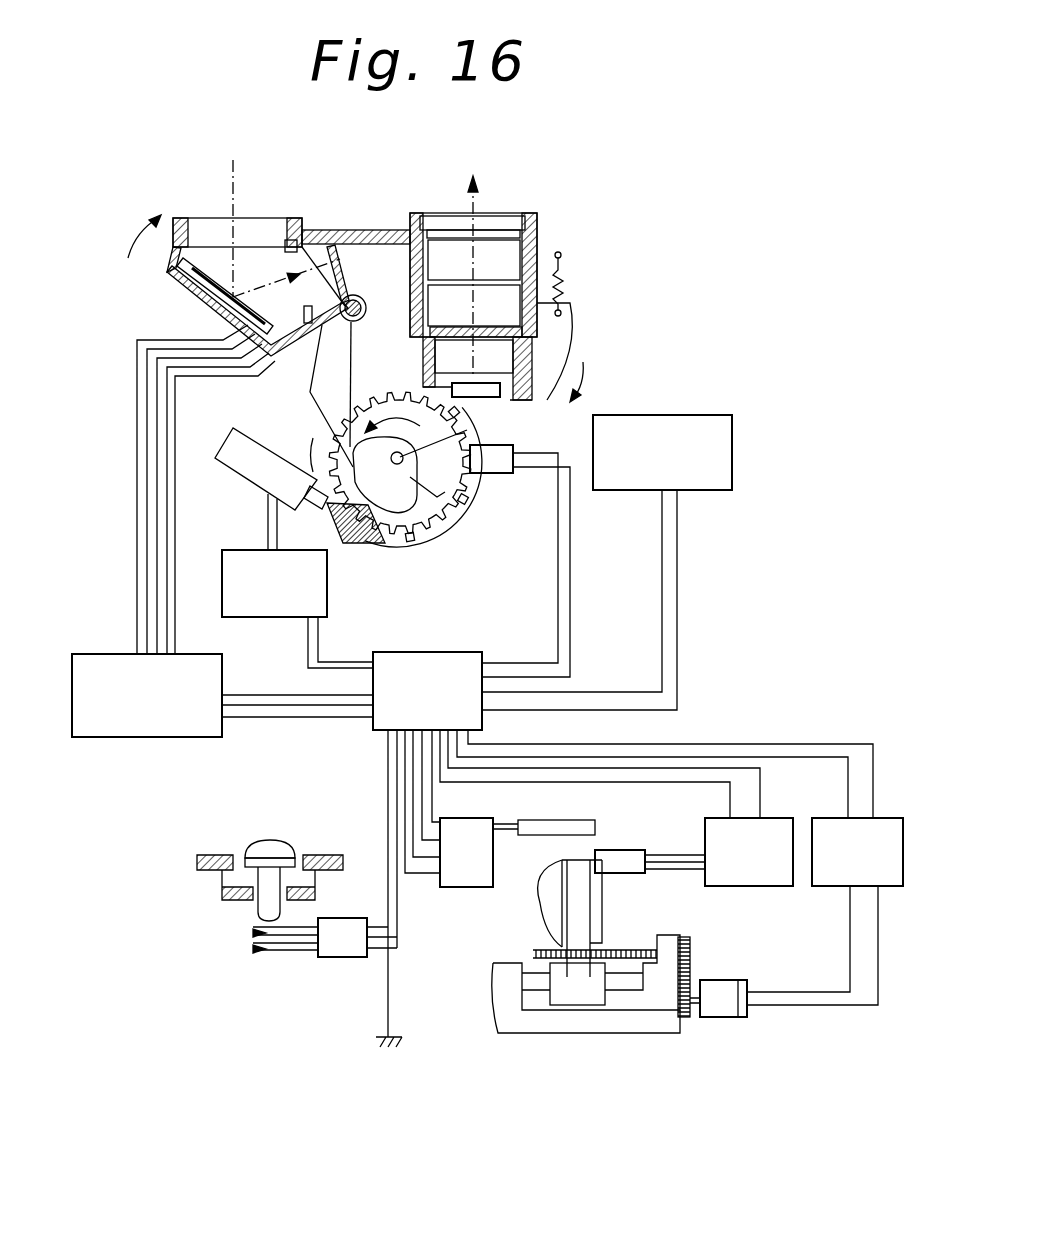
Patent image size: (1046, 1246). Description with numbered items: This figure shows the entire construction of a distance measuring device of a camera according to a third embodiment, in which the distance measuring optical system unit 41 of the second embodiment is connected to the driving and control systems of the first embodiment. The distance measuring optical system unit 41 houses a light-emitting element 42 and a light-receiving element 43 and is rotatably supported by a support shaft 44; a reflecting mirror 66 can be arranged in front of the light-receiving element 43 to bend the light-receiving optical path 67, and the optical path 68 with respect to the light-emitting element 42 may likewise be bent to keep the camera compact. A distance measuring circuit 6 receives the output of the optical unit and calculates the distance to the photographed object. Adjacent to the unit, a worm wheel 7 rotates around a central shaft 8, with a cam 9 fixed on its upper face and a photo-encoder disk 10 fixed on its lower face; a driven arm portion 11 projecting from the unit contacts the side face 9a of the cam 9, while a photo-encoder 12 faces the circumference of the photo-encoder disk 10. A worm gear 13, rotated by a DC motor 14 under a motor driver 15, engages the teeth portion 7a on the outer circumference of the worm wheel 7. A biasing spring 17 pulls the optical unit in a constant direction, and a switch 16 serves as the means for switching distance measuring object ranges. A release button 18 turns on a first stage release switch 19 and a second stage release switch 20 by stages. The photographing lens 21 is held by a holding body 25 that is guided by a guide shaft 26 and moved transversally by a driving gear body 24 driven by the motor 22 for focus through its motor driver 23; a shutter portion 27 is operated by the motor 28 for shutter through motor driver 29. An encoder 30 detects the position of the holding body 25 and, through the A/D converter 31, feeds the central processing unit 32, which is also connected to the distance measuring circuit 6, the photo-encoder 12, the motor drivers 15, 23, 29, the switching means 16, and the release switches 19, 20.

The distance measuring circuit 6 is at (130, 738).
The worm wheel 7 is at (437, 505).
The teeth portion 7a is at (483, 487).
The central shaft 8 is at (422, 350).
The cam 9 is at (393, 505).
The side face 9a is at (468, 512).
The photo-encoder disk 10 is at (317, 443).
The driven arm portion 11 is at (335, 402).
The photo-encoder 12 is at (513, 448).
The worm gear 13 is at (373, 540).
The DC motor 14 is at (248, 463).
The motor driver 15 is at (272, 614).
The switch 16 is at (733, 427).
The biasing spring 17 is at (567, 268).
The release button 18 is at (272, 840).
The first stage release switch 19 is at (245, 931).
The second stage release switch 20 is at (248, 952).
The photographing lens 21 is at (548, 912).
The motor for focus 22 is at (727, 985).
The motor driver 23 is at (883, 818).
The driving gear body 24 is at (650, 947).
The holding body 25 is at (577, 995).
The guide shaft 26 is at (635, 1000).
The shutter portion 27 is at (600, 908).
The motor for shutter 28 is at (633, 852).
The motor driver 29 is at (780, 818).
The encoder for detecting a position of the photographing lens 30 is at (583, 822).
The A/D converter 31 is at (452, 886).
The central processing unit 32 is at (382, 730).
The distance measuring optical system unit 41 is at (197, 304).
The light-emitting element 42 is at (420, 352).
The light-receiving element 43 is at (340, 247).
The support shaft 44 is at (357, 305).
The reflecting mirror 66 is at (170, 288).
The light-receiving optical path 67 is at (236, 177).
The optical path 68 is at (480, 202).